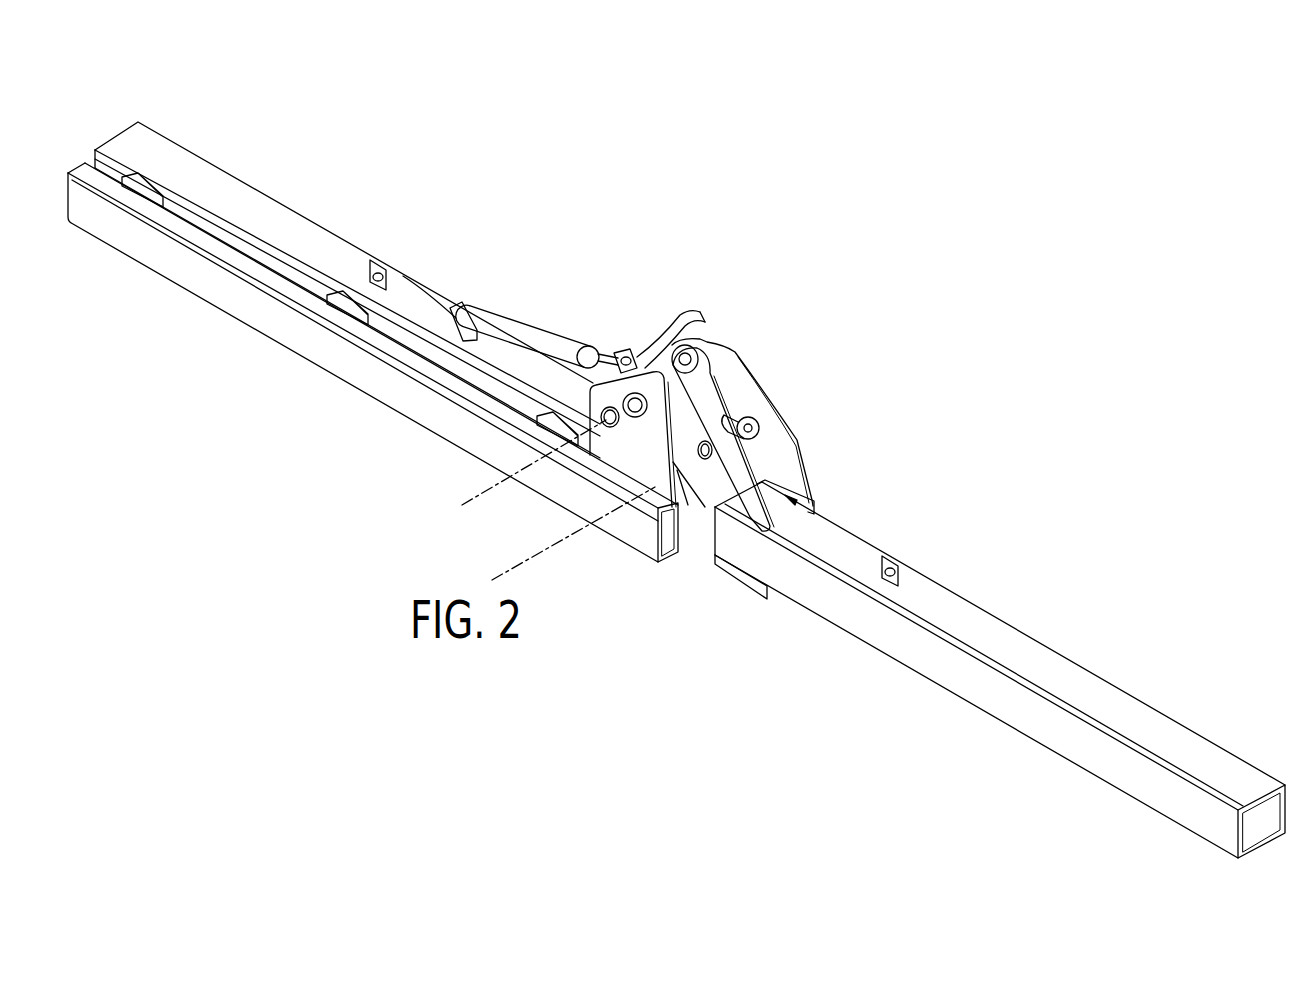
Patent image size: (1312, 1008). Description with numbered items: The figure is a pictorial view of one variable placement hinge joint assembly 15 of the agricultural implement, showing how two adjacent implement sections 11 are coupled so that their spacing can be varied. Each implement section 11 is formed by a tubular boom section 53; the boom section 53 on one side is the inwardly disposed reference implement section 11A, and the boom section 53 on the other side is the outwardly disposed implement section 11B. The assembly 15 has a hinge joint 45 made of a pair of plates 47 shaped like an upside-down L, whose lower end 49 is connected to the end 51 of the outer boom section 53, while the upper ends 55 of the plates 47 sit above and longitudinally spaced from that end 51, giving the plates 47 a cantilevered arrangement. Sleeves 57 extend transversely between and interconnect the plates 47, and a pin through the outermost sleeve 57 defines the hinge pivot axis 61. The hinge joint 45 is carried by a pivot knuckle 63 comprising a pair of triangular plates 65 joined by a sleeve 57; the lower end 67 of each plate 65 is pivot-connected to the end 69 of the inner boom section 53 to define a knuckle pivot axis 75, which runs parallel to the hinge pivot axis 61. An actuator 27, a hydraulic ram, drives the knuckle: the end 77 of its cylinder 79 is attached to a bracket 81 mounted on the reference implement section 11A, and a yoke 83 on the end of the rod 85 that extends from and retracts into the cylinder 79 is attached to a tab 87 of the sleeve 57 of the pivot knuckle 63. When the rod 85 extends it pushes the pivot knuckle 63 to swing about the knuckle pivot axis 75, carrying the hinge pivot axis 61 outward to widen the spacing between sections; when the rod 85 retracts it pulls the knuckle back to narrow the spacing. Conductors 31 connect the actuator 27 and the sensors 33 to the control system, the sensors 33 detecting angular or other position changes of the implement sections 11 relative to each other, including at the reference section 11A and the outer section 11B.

The implement section 11 is at (86, 253).
The reference implement section 11A is at (142, 274).
The outwardly disposed implement section 11B is at (1204, 846).
The variable placement hinge joint assembly 15 is at (864, 223).
The actuator 27 is at (541, 327).
The conductors 31 is at (388, 262).
The sensors 33 is at (362, 262).
The hinge joint 45 is at (780, 389).
The plates 47 is at (790, 445).
The lower end 49 is at (815, 498).
The end 51 is at (790, 497).
The boom section 53 is at (233, 291).
The upper ends 55 is at (690, 403).
The sleeves 57 is at (691, 368).
The hinge pivot axis 61 is at (472, 499).
The pivot knuckle 63 is at (647, 311).
The plates 65 is at (701, 316).
The lower end 67 is at (632, 477).
The end 69 is at (582, 412).
The knuckle pivot axis 75 is at (553, 548).
The end 77 is at (448, 307).
The cylinder 79 is at (506, 317).
The bracket 81 is at (404, 275).
The yoke 83 is at (622, 355).
The rod 85 is at (594, 348).
The tab 87 is at (666, 346).